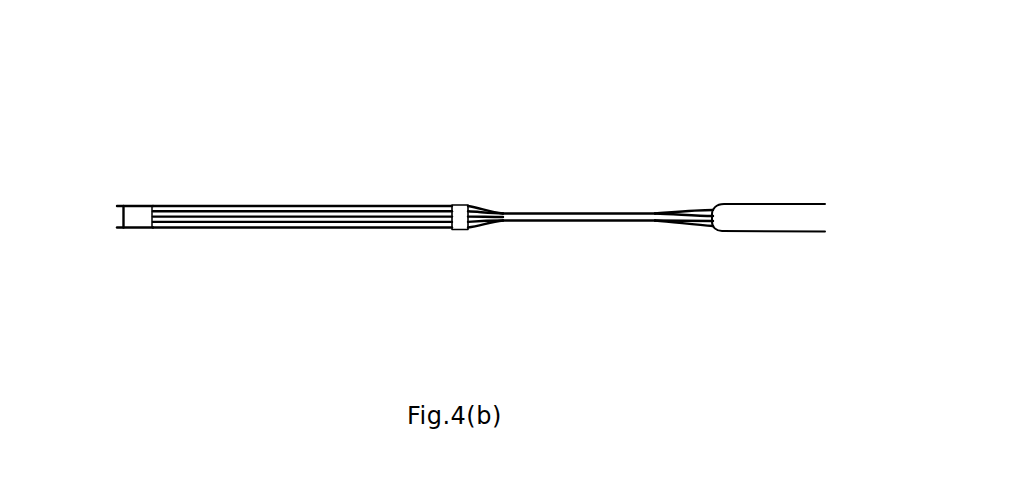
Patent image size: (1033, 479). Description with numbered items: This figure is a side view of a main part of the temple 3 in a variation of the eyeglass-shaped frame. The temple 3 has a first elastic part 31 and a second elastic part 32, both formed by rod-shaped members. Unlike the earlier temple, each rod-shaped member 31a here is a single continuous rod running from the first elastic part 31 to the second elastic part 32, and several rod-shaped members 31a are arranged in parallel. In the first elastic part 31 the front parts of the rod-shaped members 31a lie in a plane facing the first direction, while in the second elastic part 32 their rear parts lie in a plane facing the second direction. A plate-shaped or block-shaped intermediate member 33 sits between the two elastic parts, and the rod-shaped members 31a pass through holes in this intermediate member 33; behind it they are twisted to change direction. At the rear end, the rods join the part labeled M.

The temple 3 is at (158, 297).
The first elastic part 31 is at (302, 198).
The rod-shaped member 31a is at (317, 206).
The second elastic part 32 is at (575, 162).
The intermediate member 33 is at (460, 206).
The connector M is at (740, 215).